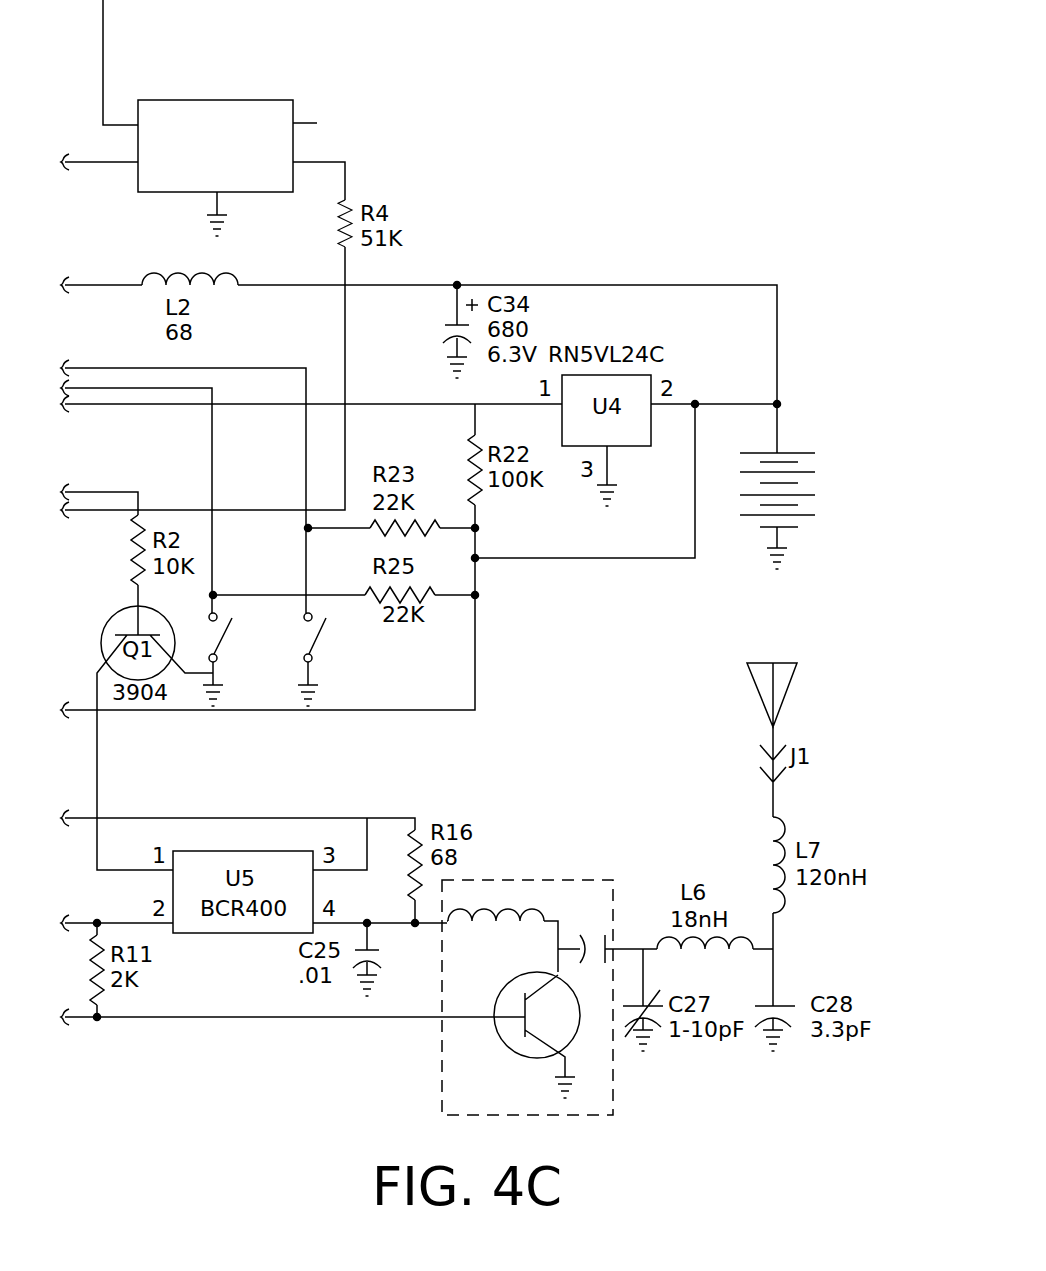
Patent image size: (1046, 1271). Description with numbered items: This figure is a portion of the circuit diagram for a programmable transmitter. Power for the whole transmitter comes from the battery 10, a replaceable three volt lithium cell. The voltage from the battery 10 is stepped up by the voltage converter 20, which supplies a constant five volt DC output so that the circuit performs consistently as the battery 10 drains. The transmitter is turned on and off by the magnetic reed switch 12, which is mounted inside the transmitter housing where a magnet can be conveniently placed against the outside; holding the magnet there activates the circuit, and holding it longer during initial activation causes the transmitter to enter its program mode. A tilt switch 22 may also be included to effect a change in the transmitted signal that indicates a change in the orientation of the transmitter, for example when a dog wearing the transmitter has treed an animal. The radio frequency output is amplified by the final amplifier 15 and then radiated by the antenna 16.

The voltage converter 20 is at (297, 95).
The battery 10 is at (836, 480).
The antenna 16 is at (808, 683).
The final amplifier 15 is at (568, 868).
The tilt switch 22 is at (262, 710).
The magnetic reed switch 12 is at (393, 710).